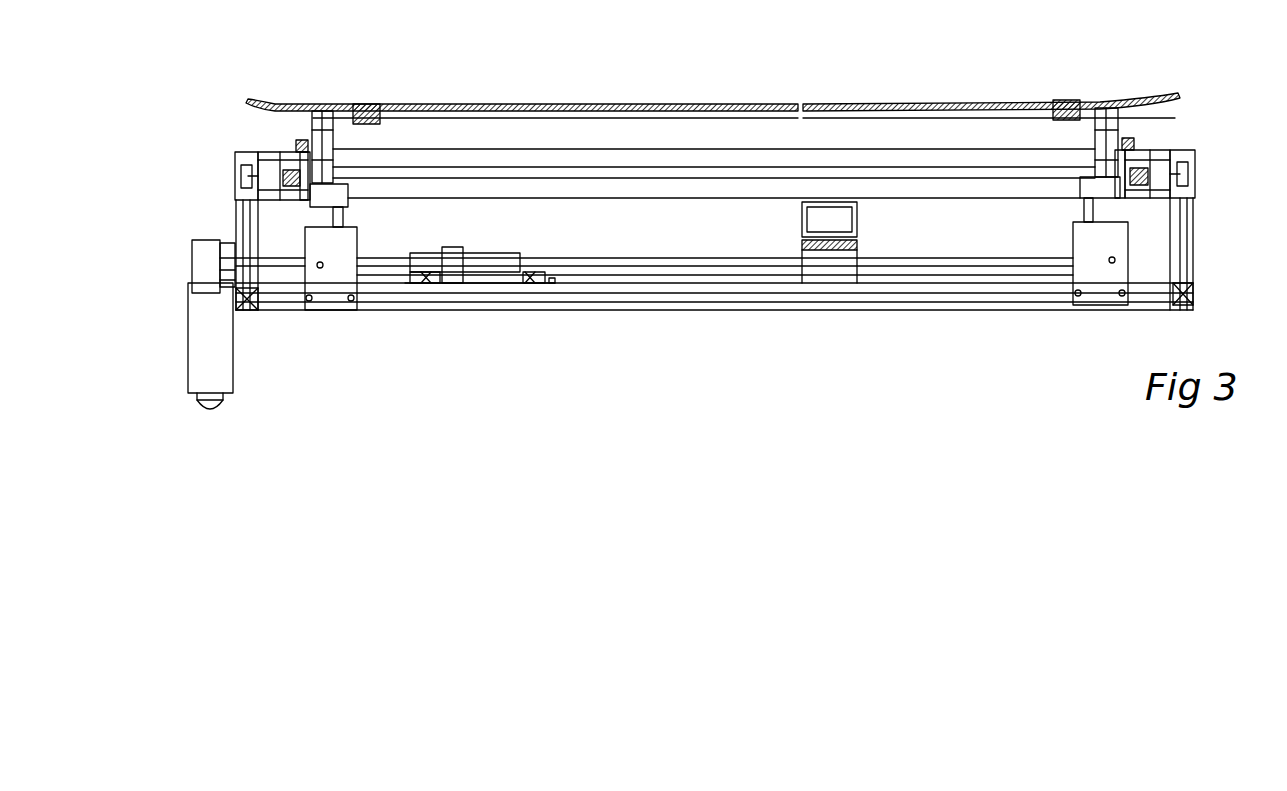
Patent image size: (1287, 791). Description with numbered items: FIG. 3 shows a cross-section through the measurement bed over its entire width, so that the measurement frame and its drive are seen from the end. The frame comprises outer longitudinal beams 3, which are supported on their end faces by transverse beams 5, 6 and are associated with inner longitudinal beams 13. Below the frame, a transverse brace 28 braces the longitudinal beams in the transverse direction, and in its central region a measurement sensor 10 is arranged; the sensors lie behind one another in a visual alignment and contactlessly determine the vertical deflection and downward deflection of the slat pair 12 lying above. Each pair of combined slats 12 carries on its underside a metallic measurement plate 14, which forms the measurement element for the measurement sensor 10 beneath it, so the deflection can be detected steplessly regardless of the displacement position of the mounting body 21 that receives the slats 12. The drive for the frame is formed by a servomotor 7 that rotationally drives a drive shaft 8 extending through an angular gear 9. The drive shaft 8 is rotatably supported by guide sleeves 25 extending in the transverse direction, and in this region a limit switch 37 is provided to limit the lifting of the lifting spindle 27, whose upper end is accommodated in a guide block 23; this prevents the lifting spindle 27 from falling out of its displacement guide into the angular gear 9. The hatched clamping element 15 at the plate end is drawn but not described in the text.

The outer longitudinal beam 3 is at (243, 150).
The transverse beam 5 is at (640, 158).
The transverse beam 6 is at (710, 218).
The servomotor 7 is at (197, 327).
The drive shaft 8 is at (645, 262).
The angular gear 9 is at (333, 285).
The measurement sensor 10 is at (855, 222).
The slat pair 12 is at (512, 103).
The inner longitudinal beam 13 is at (282, 148).
The metallic measurement plate 14 is at (852, 103).
The hatched clamping block 15 is at (372, 101).
The mounting body 21 is at (300, 197).
The guide block 23 is at (340, 190).
The guide sleeve 25 is at (500, 290).
The lifting spindle 27 is at (345, 217).
The transverse brace 28 is at (900, 297).
The limit switch 37 is at (433, 310).